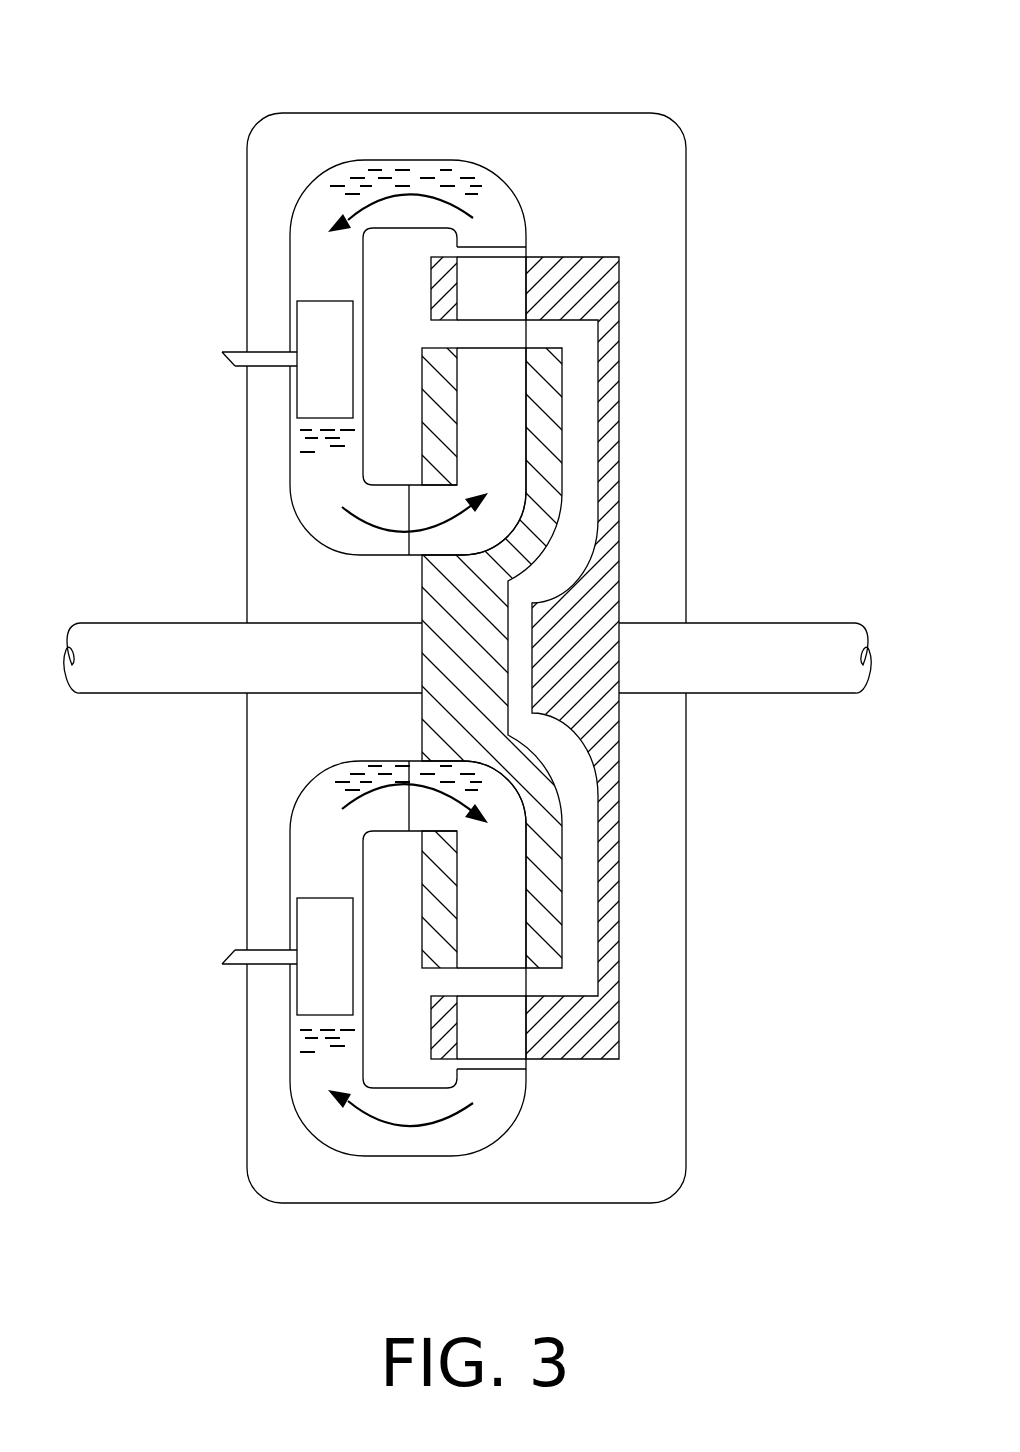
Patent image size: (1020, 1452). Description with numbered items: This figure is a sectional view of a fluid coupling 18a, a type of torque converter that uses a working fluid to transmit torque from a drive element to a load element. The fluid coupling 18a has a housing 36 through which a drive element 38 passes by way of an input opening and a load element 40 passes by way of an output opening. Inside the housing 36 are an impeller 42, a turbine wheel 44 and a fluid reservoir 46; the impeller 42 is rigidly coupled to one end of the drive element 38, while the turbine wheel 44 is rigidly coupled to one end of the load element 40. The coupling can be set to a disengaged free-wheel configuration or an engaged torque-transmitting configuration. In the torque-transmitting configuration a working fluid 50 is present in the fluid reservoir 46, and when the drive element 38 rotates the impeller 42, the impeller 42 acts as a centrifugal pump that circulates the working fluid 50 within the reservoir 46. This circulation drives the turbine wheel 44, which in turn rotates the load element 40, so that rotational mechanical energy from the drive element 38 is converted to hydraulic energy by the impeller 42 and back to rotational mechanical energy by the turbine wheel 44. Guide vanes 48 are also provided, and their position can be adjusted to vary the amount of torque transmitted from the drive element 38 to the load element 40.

The fluid coupling 18a is at (600, 113).
The housing 36 is at (686, 179).
The drive element 38 is at (206, 694).
The load element 40 is at (728, 694).
The impeller 42 is at (550, 510).
The turbine wheel 44 is at (597, 285).
The fluid reservoir 46 is at (425, 162).
The guide vanes 48 is at (312, 390).
The working fluid 50 is at (358, 182).